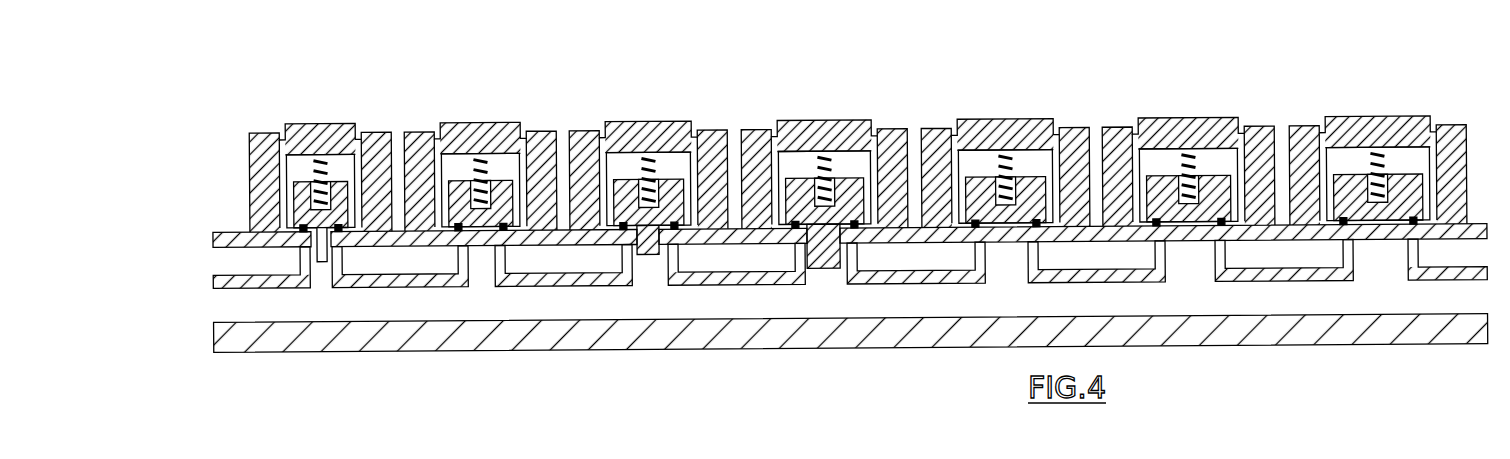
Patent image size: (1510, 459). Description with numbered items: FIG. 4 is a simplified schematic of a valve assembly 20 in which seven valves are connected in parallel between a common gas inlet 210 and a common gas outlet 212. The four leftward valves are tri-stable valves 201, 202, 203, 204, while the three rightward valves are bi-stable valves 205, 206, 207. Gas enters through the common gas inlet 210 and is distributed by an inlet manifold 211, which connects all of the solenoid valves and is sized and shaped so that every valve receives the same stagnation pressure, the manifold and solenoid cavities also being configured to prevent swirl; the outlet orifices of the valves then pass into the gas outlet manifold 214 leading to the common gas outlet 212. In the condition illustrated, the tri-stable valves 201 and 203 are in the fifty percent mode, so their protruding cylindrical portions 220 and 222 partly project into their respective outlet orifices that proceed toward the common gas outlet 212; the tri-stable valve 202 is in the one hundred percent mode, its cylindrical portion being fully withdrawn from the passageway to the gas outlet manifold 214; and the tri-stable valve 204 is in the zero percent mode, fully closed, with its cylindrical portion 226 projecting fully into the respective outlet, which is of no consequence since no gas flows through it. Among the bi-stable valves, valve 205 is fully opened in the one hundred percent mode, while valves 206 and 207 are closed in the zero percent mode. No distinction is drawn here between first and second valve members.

The valve assembly 20 is at (828, 176).
The tri-stable valve 201 is at (370, 106).
The tri-stable valve 202 is at (526, 106).
The tri-stable valve 203 is at (698, 106).
The tri-stable valve 204 is at (881, 106).
The bi-stable valve 205 is at (1053, 106).
The bi-stable valve 206 is at (1242, 106).
The bi-stable valve 207 is at (1434, 106).
The common gas inlet 210 is at (241, 257).
The inlet manifold 211 is at (407, 262).
The common gas outlet 212 is at (241, 298).
The gas outlet manifold 214 is at (586, 317).
The cylindrical portion 220 is at (324, 232).
The cylindrical portion 222 is at (660, 238).
The cylindrical portion 226 is at (830, 260).